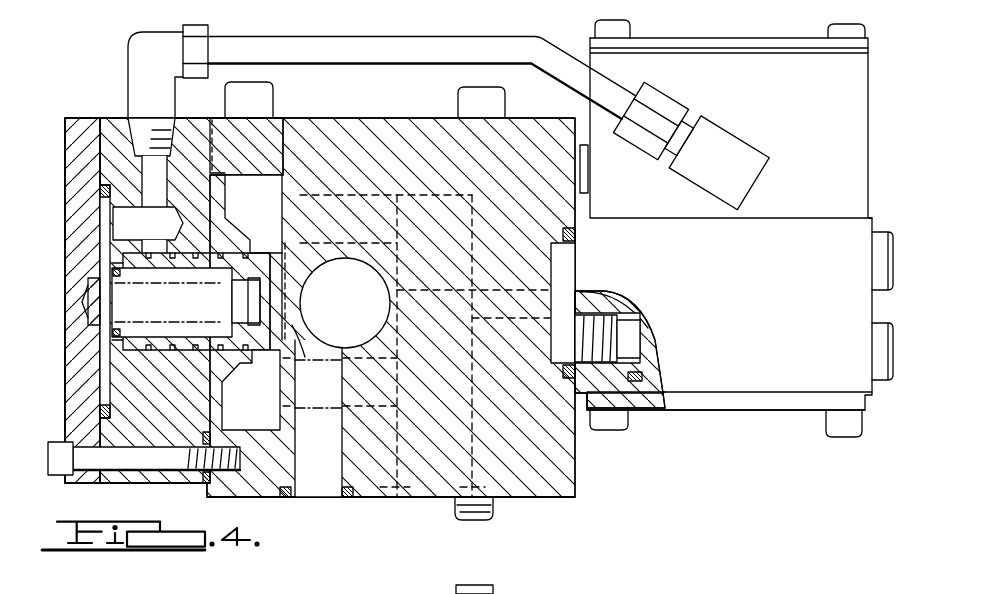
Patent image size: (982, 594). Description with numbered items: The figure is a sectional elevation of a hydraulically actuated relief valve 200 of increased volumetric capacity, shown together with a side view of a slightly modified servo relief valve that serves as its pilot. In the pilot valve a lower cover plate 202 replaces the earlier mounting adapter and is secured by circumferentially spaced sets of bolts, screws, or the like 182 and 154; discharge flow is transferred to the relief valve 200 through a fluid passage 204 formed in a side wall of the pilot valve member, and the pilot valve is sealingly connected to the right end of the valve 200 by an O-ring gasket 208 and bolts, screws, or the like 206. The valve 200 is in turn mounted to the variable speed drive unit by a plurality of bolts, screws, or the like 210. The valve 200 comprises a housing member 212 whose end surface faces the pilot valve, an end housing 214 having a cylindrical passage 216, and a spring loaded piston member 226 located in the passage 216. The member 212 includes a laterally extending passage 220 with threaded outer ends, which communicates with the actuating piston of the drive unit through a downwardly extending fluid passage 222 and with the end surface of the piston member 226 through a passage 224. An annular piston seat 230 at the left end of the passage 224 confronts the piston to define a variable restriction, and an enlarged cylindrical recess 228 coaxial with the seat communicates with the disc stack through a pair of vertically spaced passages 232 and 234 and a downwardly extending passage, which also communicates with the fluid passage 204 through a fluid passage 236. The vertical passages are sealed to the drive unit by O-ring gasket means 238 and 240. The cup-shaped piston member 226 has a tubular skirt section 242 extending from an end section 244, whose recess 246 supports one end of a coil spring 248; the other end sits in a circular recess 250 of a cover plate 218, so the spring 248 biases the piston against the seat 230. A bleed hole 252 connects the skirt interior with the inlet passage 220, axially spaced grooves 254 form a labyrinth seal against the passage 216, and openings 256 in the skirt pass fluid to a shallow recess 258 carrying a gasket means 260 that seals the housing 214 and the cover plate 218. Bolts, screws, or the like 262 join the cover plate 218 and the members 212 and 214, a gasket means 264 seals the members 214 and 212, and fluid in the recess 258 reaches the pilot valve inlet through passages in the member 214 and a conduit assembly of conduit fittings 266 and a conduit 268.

The hydraulically actuated relief valve 200 is at (540, 506).
The end housing 214 is at (120, 486).
The conduit fitting 266 is at (136, 56).
The conduit 268 is at (333, 66).
The bolts, screws, or the like 210 is at (258, 108).
The gasket means / fluid passage 264 is at (140, 163).
The bolts, screws, or the like / fluid passage 262 is at (35, 490).
The recess 258 is at (100, 377).
The gasket means 260 is at (100, 412).
The recess 228 is at (270, 214).
The grooves 254 is at (222, 253).
The coil spring 248 is at (172, 302).
The tubular skirt section 242 is at (146, 301).
The recess 246 is at (247, 292).
The circular recess 250 is at (82, 300).
The cover plate 218 is at (65, 322).
The openings 256 is at (112, 342).
The end section 244 is at (285, 240).
The passage 232 is at (386, 242).
The fluid passage 236 is at (473, 346).
The passage 234 is at (357, 370).
The piston seat / fluid passage 230 is at (353, 418).
The passage 224 is at (318, 418).
The fluid passage 222 is at (340, 438).
The passage 220 is at (345, 303).
The bleed hole 252 is at (320, 315).
The piston member 226 is at (148, 387).
The cylindrical passage 216 is at (173, 412).
The O-ring gasket means 238 is at (283, 490).
The housing member 212 is at (357, 498).
The O-ring gasket means 240 is at (388, 497).
The O-ring gasket 208 is at (578, 236).
The bolts, screws, or the like 154 is at (826, 438).
The lower cover plate 202 is at (678, 413).
The bolts, screws, or the like 206 is at (877, 330).
The fluid passage 204 is at (605, 352).
The bolts, screws, or the like 182 is at (610, 438).